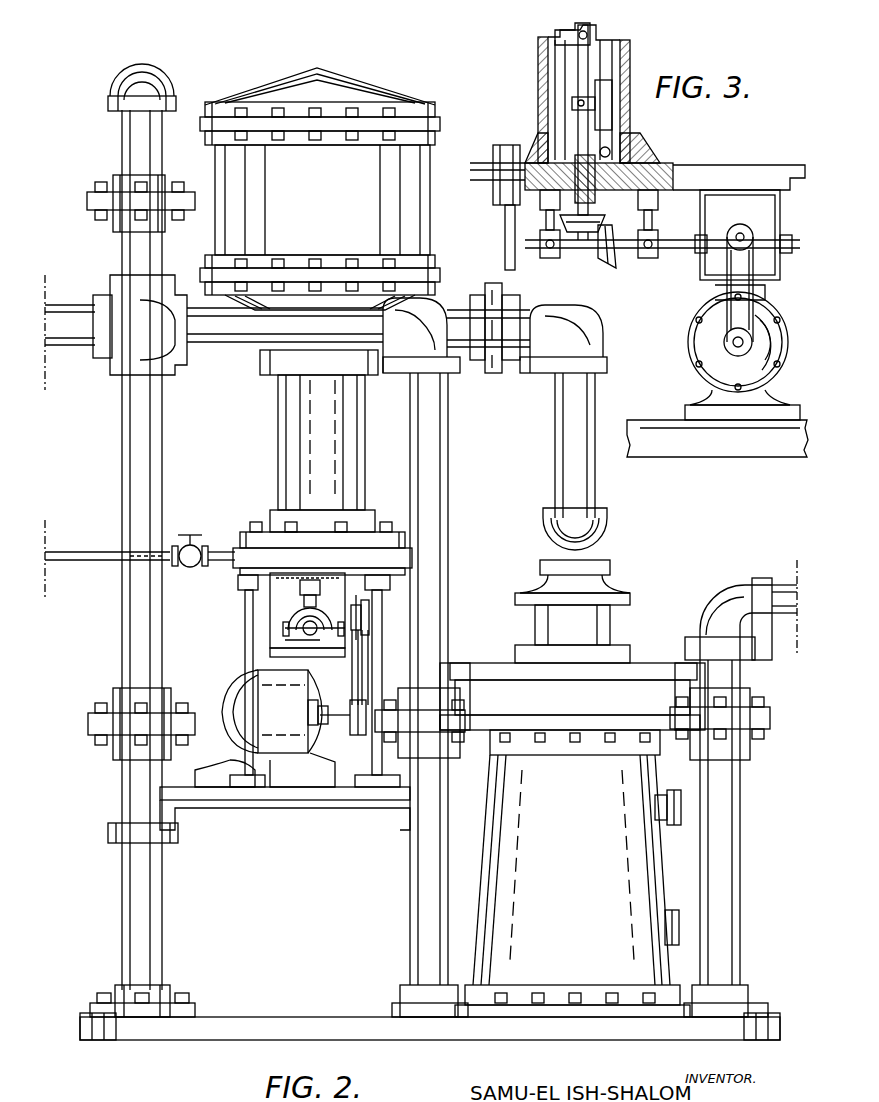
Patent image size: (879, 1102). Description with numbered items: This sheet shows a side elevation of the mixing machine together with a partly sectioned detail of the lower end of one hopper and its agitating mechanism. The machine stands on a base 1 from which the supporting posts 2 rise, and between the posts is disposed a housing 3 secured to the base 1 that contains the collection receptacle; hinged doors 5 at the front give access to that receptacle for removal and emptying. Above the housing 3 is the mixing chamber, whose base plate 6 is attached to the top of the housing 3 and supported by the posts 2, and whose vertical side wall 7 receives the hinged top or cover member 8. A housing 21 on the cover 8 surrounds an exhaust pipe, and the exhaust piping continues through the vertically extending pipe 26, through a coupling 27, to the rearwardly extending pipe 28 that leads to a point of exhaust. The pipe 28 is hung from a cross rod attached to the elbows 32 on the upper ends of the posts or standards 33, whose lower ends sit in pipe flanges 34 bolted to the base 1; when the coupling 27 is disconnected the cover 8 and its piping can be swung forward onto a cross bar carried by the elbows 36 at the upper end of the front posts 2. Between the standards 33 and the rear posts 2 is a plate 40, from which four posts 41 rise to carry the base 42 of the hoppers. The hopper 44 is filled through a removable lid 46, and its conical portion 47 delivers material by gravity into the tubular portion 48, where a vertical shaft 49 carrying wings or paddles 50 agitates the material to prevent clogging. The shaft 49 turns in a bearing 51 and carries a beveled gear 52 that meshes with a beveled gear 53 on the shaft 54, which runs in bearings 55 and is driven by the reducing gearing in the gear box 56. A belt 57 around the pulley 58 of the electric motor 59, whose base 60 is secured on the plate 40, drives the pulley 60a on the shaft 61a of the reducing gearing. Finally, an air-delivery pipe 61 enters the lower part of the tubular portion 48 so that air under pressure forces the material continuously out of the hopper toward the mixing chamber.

In FIG. 2, the base 1 is at (246, 1022).
In FIG. 2, the supporting posts 2 is at (420, 880).
In FIG. 2, the housing 3 is at (572, 886).
In FIG. 2, the hinged doors 5 is at (660, 872).
In FIG. 2, the base plate 6 is at (522, 722).
In FIG. 2, the vertical side wall 7 is at (572, 696).
In FIG. 2, the top or cover member 8 is at (485, 668).
In FIG. 2, the housing 21 is at (612, 630).
In FIG. 2, the vertically extending pipe 26 is at (557, 436).
In FIG. 2, the coupling 27 is at (492, 375).
In FIG. 2, the rearwardly extending pipe 28 is at (58, 306).
In FIG. 2, the elbows 32 is at (108, 72).
In FIG. 2, the posts or standards 33 is at (124, 134).
In FIG. 2, the pipe flanges 34 is at (165, 988).
In FIG. 2, the elbows 36 is at (730, 605).
In FIG. 2, the plate 40 is at (238, 795).
In FIG. 2, the posts 41 is at (245, 600).
In FIG. 3, the posts 41 is at (505, 232).
In FIG. 2, the base 42 is at (232, 545).
In FIG. 3, the base 42 is at (485, 172).
In FIG. 2, the hopper 44 is at (320, 198).
In FIG. 2, the removable lid 46 is at (250, 92).
In FIG. 2, the conical portion 47 is at (250, 322).
In FIG. 2, the tubular portion 48 is at (280, 404).
In FIG. 3, the tubular portion 48 is at (540, 86).
In FIG. 3, the shaft 49 is at (578, 63).
In FIG. 3, the wings or paddles 50 is at (560, 42).
In FIG. 3, the bearing 51 is at (565, 162).
In FIG. 3, the beveled gear 52 is at (592, 233).
In FIG. 3, the beveled gear 53 is at (612, 268).
In FIG. 2, the shaft 54 is at (300, 645).
In FIG. 3, the shaft 54 is at (683, 249).
In FIG. 2, the bearings 55 is at (300, 628).
In FIG. 3, the bearings 55 is at (548, 258).
In FIG. 3, the gear box 56 is at (712, 208).
In FIG. 2, the belt 57 is at (354, 657).
In FIG. 3, the belt 57 is at (758, 298).
In FIG. 2, the pulley 58 is at (352, 728).
In FIG. 3, the pulley 58 is at (724, 346).
In FIG. 2, the electric motor 59 is at (272, 711).
In FIG. 3, the electric motor 59 is at (700, 372).
In FIG. 2, the base 60 is at (293, 790).
In FIG. 3, the base 60 is at (672, 420).
In FIG. 2, the pulley 60a is at (370, 608).
In FIG. 3, the pulley 60a is at (735, 285).
In FIG. 2, the air-delivery pipe 61 is at (66, 544).
In FIG. 2, the shaft 61a is at (362, 622).
In FIG. 3, the shaft 61a is at (743, 232).